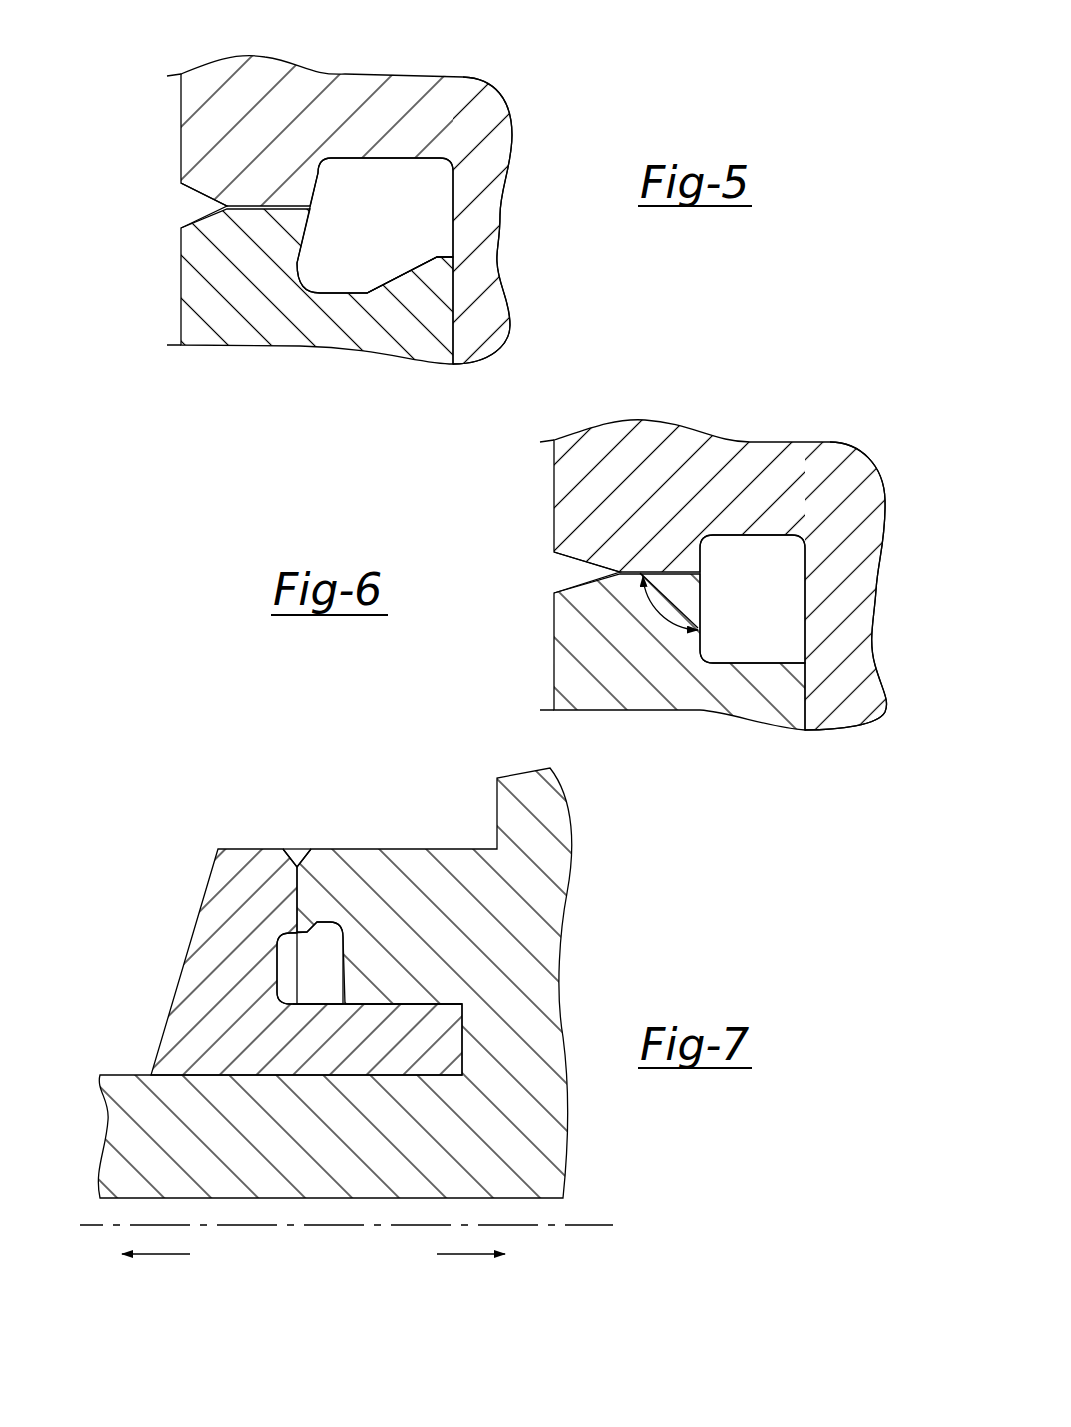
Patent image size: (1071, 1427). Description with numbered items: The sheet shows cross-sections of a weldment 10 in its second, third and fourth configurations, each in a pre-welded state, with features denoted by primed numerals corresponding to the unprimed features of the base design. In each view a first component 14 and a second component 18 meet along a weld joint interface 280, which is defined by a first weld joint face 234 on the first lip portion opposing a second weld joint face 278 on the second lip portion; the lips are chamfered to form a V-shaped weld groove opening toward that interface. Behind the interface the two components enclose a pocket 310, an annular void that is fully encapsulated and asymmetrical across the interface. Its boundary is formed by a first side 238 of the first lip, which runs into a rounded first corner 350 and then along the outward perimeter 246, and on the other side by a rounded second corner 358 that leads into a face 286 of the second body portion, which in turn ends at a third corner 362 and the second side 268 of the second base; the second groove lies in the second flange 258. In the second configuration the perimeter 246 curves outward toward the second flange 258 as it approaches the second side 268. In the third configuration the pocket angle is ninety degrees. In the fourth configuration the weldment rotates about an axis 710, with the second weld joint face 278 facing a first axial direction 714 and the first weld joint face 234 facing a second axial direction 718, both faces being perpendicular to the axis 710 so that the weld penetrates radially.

In FIG. 5, the weldment 10 is at (155, 45).
In FIG. 6, the weldment 10 is at (537, 420).
In FIG. 7, the weldment 10 is at (160, 807).
In FIG. 5, the first component 14 is at (218, 347).
In FIG. 6, the first component 14 is at (630, 715).
In FIG. 7, the first component 14 is at (530, 992).
In FIG. 5, the second component 18 is at (468, 76).
In FIG. 6, the second component 18 is at (857, 450).
In FIG. 7, the second component 18 is at (203, 1017).
In FIG. 6, the first weld joint face 234 is at (657, 571).
In FIG. 7, the first weld joint face 234 is at (297, 889).
In FIG. 5, the first side 238 is at (307, 187).
In FIG. 6, the first side 238 is at (700, 555).
In FIG. 7, the first side 238 is at (293, 928).
In FIG. 5, the outward perimeter 246 is at (373, 297).
In FIG. 6, the outward perimeter 246 is at (780, 667).
In FIG. 7, the outward perimeter 246 is at (345, 965).
In FIG. 5, the second flange 258 is at (363, 90).
In FIG. 5, the second side 268 is at (440, 313).
In FIG. 6, the second side 268 is at (806, 705).
In FIG. 7, the second side 268 is at (317, 1005).
In FIG. 7, the second weld joint face 278 is at (299, 892).
In FIG. 5, the weld joint interface 280 is at (223, 206).
In FIG. 6, the weld joint interface 280 is at (573, 572).
In FIG. 7, the weld joint interface 280 is at (297, 863).
In FIG. 5, the face 286 is at (400, 157).
In FIG. 6, the face 286 is at (752, 534).
In FIG. 7, the face 286 is at (277, 968).
In FIG. 5, the pocket 310 is at (428, 233).
In FIG. 6, the pocket 310 is at (787, 600).
In FIG. 7, the pocket 310 is at (325, 988).
In FIG. 5, the first corner 350 is at (302, 270).
In FIG. 6, the first corner 350 is at (700, 663).
In FIG. 7, the first corner 350 is at (313, 922).
In FIG. 5, the second corner 358 is at (318, 165).
In FIG. 6, the second corner 358 is at (698, 537).
In FIG. 7, the second corner 358 is at (277, 933).
In FIG. 5, the third corner 362 is at (453, 162).
In FIG. 6, the third corner 362 is at (806, 548).
In FIG. 7, the axis 710 is at (580, 1225).
In FIG. 7, the first axial direction 714 is at (453, 1255).
In FIG. 7, the second axial direction 718 is at (168, 1255).